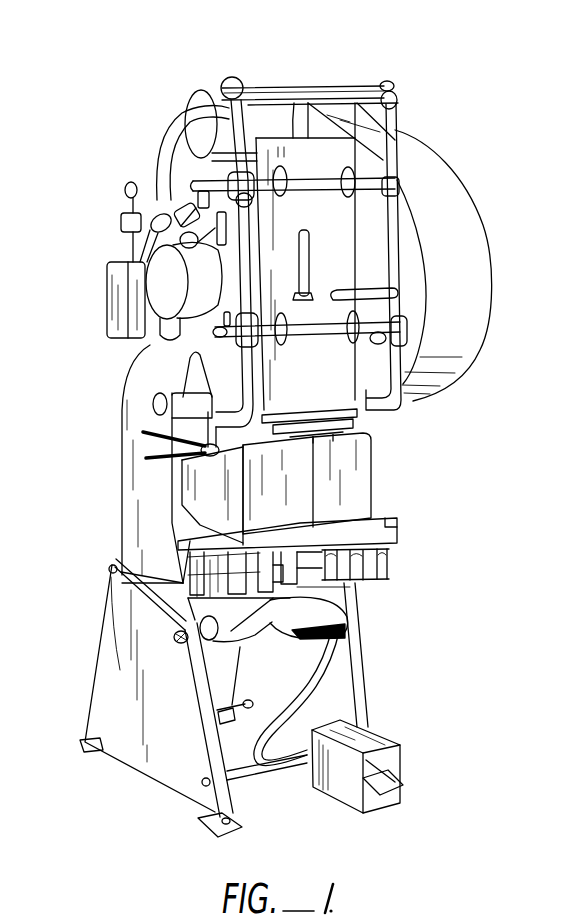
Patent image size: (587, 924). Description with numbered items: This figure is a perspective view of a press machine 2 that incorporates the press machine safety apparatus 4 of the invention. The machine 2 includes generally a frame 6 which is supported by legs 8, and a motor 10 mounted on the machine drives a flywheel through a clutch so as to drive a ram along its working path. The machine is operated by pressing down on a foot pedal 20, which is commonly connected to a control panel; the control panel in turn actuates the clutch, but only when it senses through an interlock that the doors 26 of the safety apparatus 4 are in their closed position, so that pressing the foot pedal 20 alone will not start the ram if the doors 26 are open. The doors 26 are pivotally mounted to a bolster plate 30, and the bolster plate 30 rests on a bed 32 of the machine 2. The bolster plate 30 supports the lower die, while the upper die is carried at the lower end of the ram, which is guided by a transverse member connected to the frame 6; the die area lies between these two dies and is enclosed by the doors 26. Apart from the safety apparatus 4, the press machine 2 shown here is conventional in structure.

The press machine 2 is at (110, 44).
The press machine safety apparatus 4 is at (448, 412).
The frame 6 is at (122, 424).
The legs 8 is at (362, 668).
The motor 10 is at (198, 103).
The foot pedal 20 is at (402, 773).
The doors 26 is at (350, 453).
The bolster plate 30 is at (383, 515).
The bed 32 is at (312, 578).